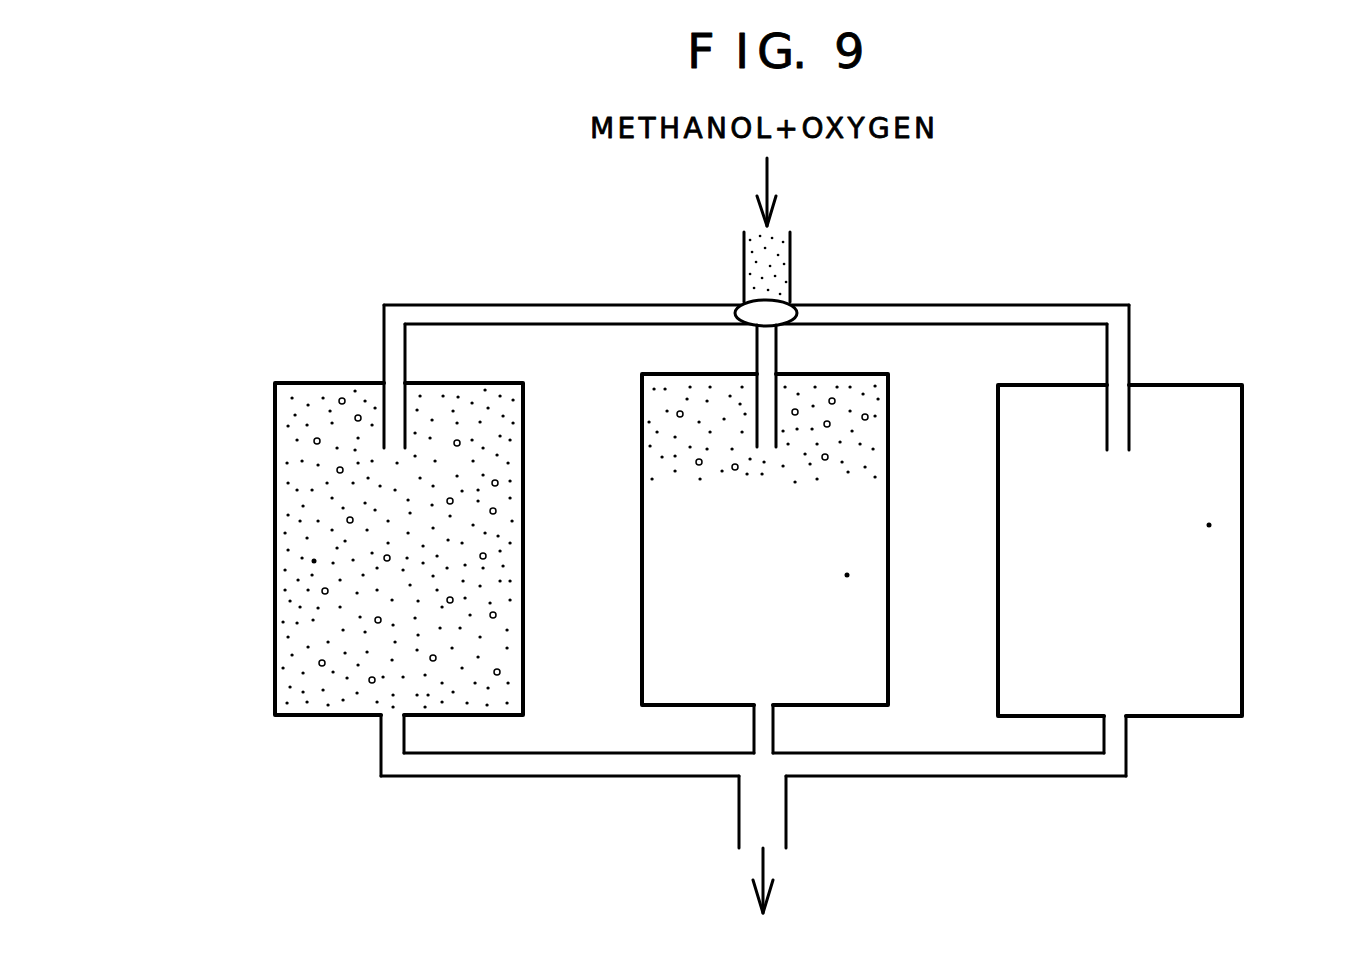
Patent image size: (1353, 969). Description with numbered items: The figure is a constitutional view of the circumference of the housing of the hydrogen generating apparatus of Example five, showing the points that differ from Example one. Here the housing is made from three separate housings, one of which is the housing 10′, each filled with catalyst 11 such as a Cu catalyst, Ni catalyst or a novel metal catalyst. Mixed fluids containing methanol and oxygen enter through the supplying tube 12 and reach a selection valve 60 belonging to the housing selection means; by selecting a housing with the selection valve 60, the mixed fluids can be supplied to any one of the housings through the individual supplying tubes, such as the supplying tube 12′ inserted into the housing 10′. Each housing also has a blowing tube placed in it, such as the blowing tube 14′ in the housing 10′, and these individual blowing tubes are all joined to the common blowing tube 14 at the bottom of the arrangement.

The housing 10′ is at (275, 452).
The catalyst 11 is at (314, 561).
The supplying tube 12 is at (790, 275).
The supplying tube 12′ is at (392, 355).
The blowing tube 14 is at (745, 825).
The blowing tube 14′ is at (385, 740).
The selection valve 60 is at (745, 305).